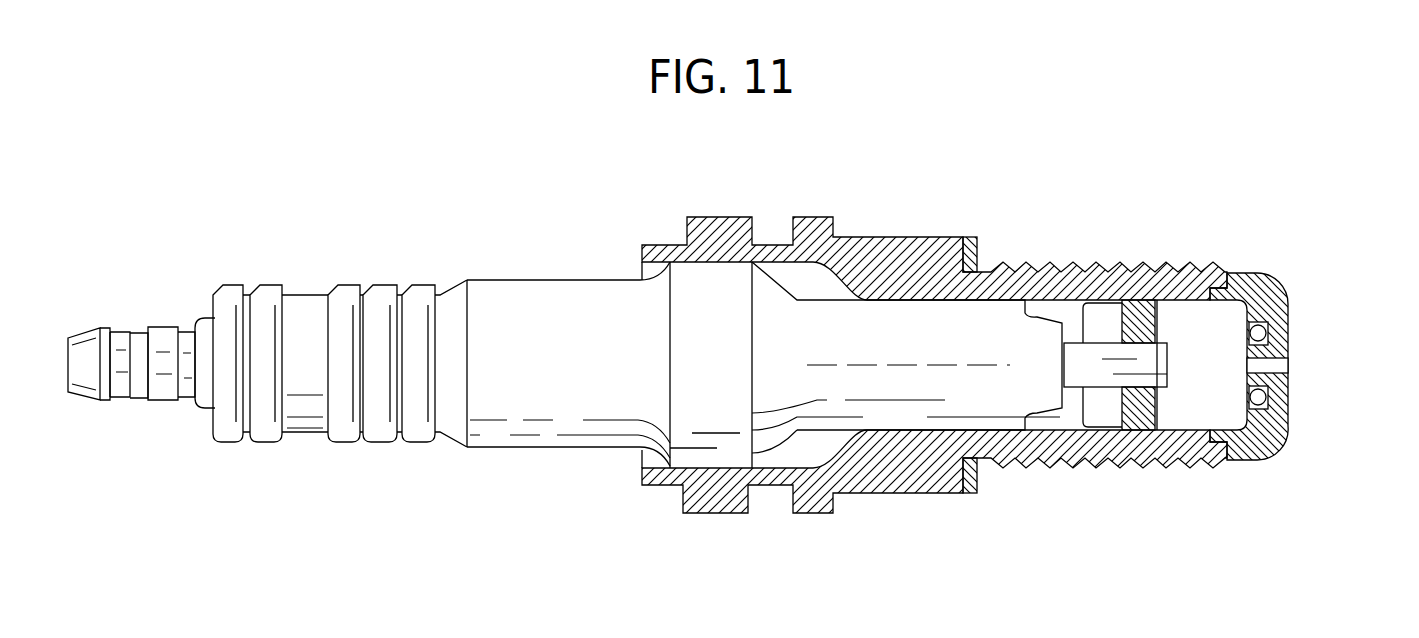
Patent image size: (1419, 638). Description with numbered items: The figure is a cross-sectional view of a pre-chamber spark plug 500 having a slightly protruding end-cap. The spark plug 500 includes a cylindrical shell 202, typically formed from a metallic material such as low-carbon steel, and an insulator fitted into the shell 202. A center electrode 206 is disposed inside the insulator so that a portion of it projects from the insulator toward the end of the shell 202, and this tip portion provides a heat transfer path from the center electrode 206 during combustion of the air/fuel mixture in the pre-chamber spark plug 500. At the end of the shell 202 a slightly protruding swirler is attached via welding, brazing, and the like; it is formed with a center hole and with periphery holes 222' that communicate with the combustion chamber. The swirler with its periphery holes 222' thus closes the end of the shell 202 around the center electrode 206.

The shell 202 is at (720, 217).
The center electrode 206 is at (1097, 343).
The periphery holes 222' is at (1310, 368).
The spark plug 500 is at (1227, 472).